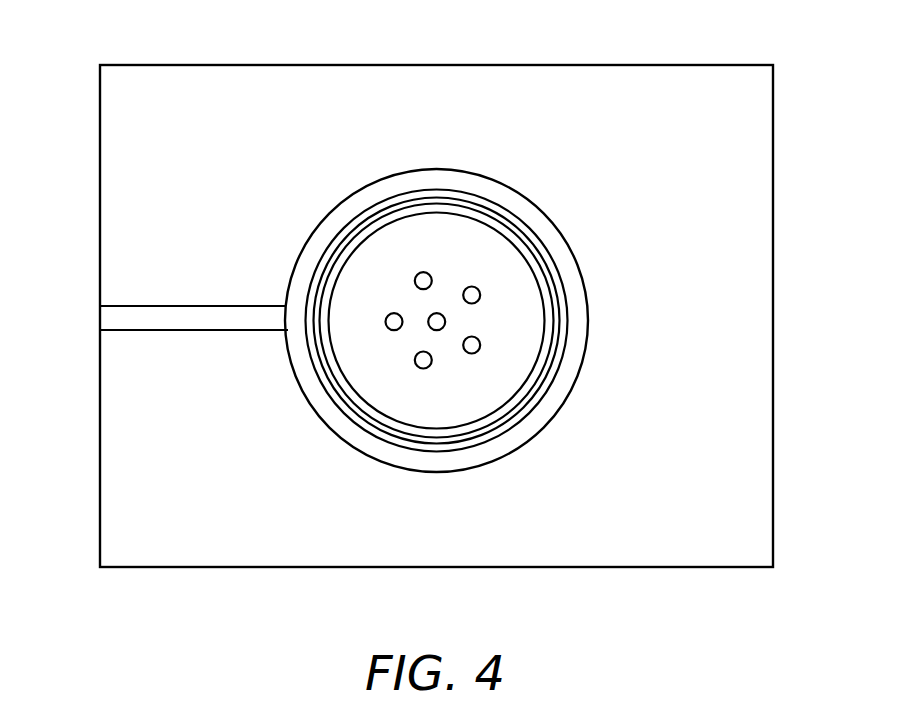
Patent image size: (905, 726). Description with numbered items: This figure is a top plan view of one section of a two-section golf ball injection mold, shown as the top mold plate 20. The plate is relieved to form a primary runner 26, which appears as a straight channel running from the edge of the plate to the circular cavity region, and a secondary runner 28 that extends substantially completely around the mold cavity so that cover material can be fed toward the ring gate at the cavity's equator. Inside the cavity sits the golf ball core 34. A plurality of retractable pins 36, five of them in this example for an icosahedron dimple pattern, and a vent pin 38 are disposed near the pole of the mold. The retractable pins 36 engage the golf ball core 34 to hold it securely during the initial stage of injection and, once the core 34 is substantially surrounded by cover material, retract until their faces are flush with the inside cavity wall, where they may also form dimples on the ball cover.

The top mold plate 20 is at (121, 112).
The primary runner 26 is at (203, 296).
The secondary runner 28 is at (565, 232).
The golf ball core 34 is at (468, 235).
The retractable pins 36 is at (469, 286).
The vent pin 38 is at (445, 321).